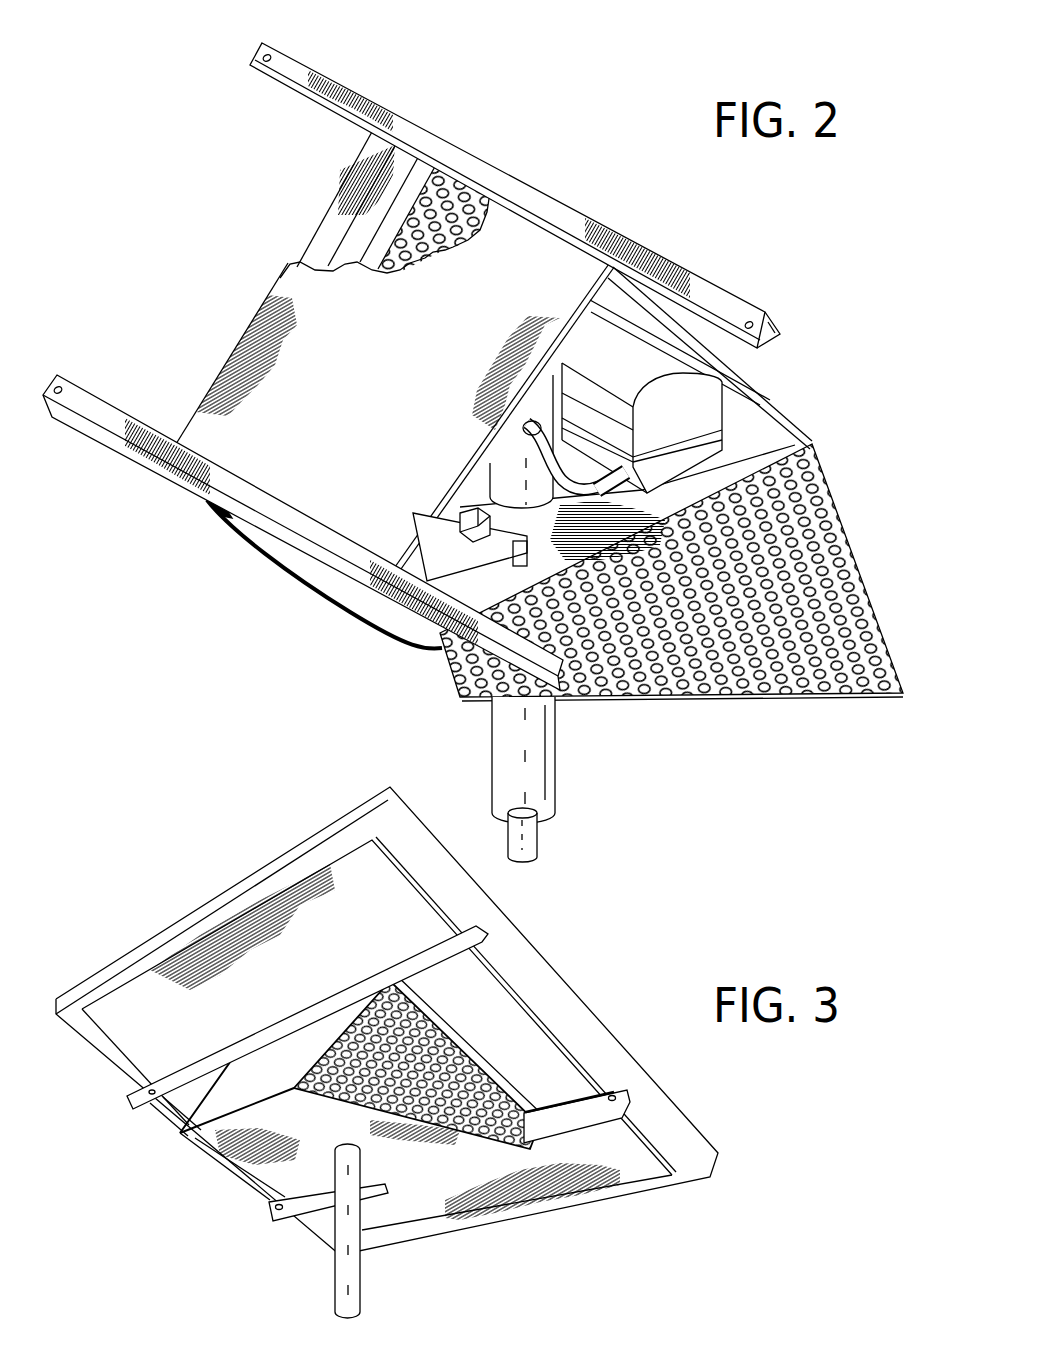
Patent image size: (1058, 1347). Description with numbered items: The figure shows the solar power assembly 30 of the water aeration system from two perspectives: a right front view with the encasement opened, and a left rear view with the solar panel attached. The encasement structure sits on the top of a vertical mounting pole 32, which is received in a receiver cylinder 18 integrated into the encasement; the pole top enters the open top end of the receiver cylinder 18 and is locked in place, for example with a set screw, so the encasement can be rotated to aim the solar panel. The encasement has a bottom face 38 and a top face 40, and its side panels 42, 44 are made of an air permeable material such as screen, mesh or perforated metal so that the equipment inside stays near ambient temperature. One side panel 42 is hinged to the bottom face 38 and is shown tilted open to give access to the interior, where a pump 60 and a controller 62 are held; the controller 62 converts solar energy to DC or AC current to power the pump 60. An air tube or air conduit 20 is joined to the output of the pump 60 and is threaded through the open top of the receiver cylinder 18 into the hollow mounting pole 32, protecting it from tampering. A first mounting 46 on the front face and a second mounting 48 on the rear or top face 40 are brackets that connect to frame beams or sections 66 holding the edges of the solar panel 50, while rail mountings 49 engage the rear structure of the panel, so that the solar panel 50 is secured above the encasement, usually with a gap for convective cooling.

In FIG. 2, the receiver cylinder 18 is at (507, 470).
In FIG. 2, the air tube or air conduit 20 is at (530, 836).
In FIG. 2, the solar power assembly 30 is at (852, 229).
In FIG. 2, the mounting pole 32 is at (548, 744).
In FIG. 3, the mounting pole 32 is at (343, 1291).
In FIG. 3, the bottom face 38 is at (267, 1160).
In FIG. 2, the top face 40 is at (530, 243).
In FIG. 2, the side panel 42 is at (837, 695).
In FIG. 2, the side panel 44 is at (413, 227).
In FIG. 2, the first mounting 46 is at (167, 440).
In FIG. 3, the first mounting 46 is at (563, 1128).
In FIG. 2, the second mounting 48 is at (452, 157).
In FIG. 3, the second mounting 48 is at (138, 1107).
In FIG. 2, the rail mounting 49 is at (607, 237).
In FIG. 3, the solar panel 50 is at (234, 890).
In FIG. 2, the pump 60 is at (687, 398).
In FIG. 2, the controller 62 is at (447, 553).
In FIG. 3, the frame beams or sections 66 is at (535, 997).